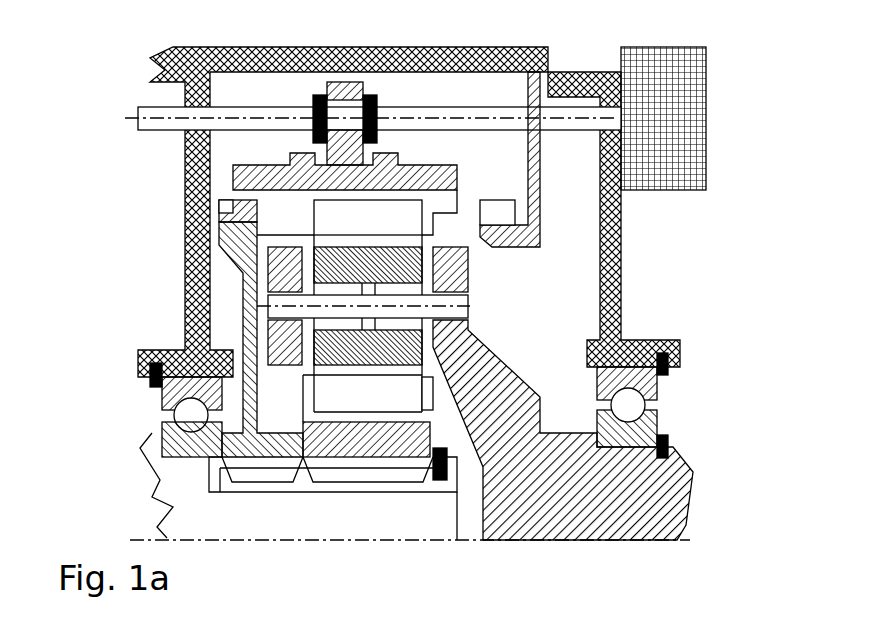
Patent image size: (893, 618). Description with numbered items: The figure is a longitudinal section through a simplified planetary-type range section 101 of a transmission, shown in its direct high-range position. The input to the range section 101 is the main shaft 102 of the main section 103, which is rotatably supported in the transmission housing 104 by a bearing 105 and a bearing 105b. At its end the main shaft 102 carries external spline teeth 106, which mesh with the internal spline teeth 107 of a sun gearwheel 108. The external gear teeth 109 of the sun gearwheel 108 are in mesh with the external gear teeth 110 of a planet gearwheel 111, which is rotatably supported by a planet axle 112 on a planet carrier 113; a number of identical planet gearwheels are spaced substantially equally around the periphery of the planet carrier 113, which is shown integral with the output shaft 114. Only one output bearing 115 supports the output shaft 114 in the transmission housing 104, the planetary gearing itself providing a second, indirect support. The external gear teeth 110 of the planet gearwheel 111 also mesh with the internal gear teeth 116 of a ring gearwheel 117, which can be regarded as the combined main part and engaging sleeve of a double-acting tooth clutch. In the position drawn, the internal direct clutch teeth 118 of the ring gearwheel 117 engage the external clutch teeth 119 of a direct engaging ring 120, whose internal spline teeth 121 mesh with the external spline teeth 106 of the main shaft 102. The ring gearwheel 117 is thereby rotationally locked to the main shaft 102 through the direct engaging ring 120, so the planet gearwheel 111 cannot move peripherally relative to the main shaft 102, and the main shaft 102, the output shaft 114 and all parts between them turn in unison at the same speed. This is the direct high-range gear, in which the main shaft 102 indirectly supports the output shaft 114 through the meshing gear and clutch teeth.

The range section 101 is at (203, 33).
The main shaft 102 is at (208, 527).
The main section 103 is at (20, 341).
The transmission housing 104 is at (183, 72).
The bearing 105 is at (158, 420).
The bearing 105b is at (20, 455).
The external spline teeth 106 is at (302, 483).
The internal spline teeth 107 is at (362, 483).
The sun gearwheel 108 is at (387, 450).
The external gear teeth 109 is at (437, 400).
The external gear teeth 110 is at (510, 401).
The planet gearwheel 111 is at (402, 353).
The planet axle 112 is at (462, 306).
The planet carrier 113 is at (465, 280).
The output shaft 114 is at (657, 500).
The output bearing 115 is at (660, 407).
The internal gear teeth 116 is at (280, 212).
The ring gearwheel 117 is at (420, 165).
The internal direct clutch teeth 118 is at (232, 196).
The external clutch teeth 119 is at (225, 212).
The direct engaging ring 120 is at (245, 280).
The internal spline teeth 121 is at (253, 484).